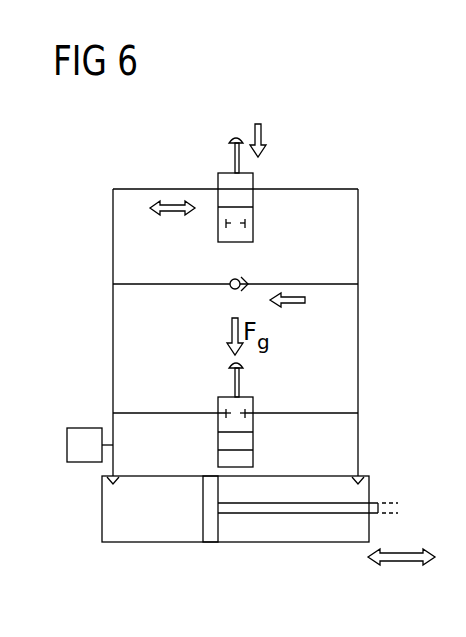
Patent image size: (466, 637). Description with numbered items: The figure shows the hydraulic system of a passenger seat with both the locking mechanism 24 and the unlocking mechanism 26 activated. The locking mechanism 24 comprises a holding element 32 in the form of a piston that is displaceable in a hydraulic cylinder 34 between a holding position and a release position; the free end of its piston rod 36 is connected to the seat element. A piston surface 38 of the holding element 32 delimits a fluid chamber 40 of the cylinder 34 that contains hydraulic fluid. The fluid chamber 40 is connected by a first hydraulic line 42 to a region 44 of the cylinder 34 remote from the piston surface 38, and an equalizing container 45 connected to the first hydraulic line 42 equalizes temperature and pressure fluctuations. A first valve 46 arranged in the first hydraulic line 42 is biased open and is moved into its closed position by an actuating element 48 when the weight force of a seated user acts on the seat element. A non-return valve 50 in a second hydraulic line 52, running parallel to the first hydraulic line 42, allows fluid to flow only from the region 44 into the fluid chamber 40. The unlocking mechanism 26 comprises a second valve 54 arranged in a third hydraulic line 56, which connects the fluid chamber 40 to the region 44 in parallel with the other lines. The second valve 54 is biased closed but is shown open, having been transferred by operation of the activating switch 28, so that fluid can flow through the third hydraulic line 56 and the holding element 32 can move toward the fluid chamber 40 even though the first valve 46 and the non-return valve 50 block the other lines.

The locking mechanism 24 is at (386, 299).
The unlocking mechanism 26 is at (386, 184).
The activating switch 28 is at (235, 160).
The holding element 32 is at (296, 508).
The cylinder 34 is at (242, 543).
The piston rod 36 is at (380, 505).
The piston surface 38 is at (205, 522).
The fluid chamber 40 is at (113, 512).
The first hydraulic line 42 is at (192, 415).
The region of the cylinder remote from the piston surface 44 is at (317, 528).
The equalizing container 45 is at (85, 428).
The first valve 46 is at (253, 405).
The actuating element 48 is at (235, 388).
The non-return valve 50 is at (231, 281).
The second hydraulic line 52 is at (325, 285).
The second valve 54 is at (253, 182).
The third hydraulic line 56 is at (308, 190).